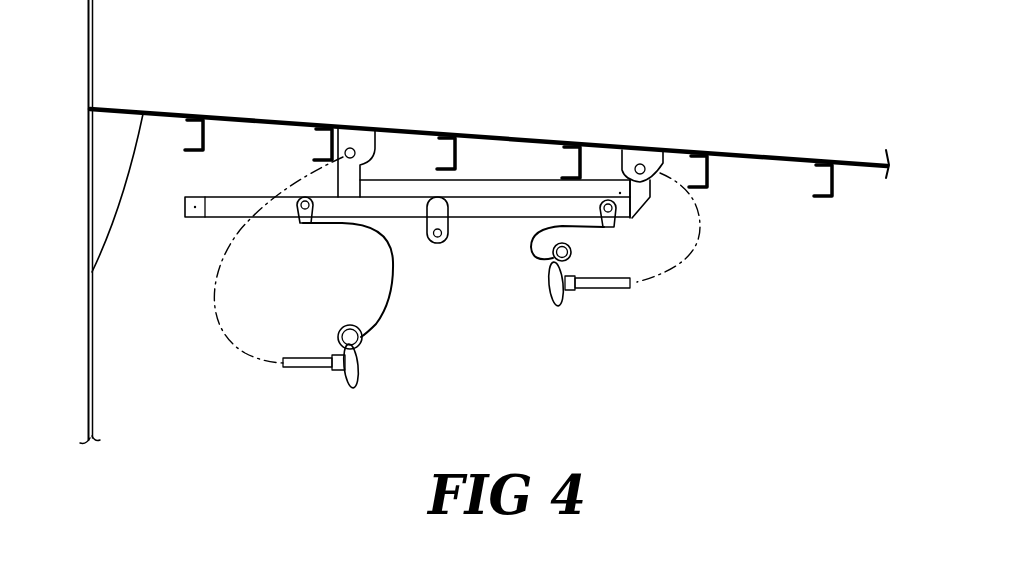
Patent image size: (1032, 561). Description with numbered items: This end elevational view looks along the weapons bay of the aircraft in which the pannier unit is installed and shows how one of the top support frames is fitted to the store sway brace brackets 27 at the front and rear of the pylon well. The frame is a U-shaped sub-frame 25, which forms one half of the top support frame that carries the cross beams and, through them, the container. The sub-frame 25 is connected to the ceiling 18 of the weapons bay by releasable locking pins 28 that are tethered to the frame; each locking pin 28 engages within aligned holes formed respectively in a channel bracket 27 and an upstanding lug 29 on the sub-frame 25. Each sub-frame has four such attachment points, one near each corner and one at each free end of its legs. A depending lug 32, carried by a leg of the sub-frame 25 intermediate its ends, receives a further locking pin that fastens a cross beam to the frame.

The ceiling 18 is at (90, 272).
The U-shaped sub-frame 25 is at (501, 183).
The store sway brace bracket 27 is at (351, 146).
The releasable locking pin 28 is at (320, 362).
The upstanding lug 29 is at (347, 168).
The depending lug 32 is at (450, 230).